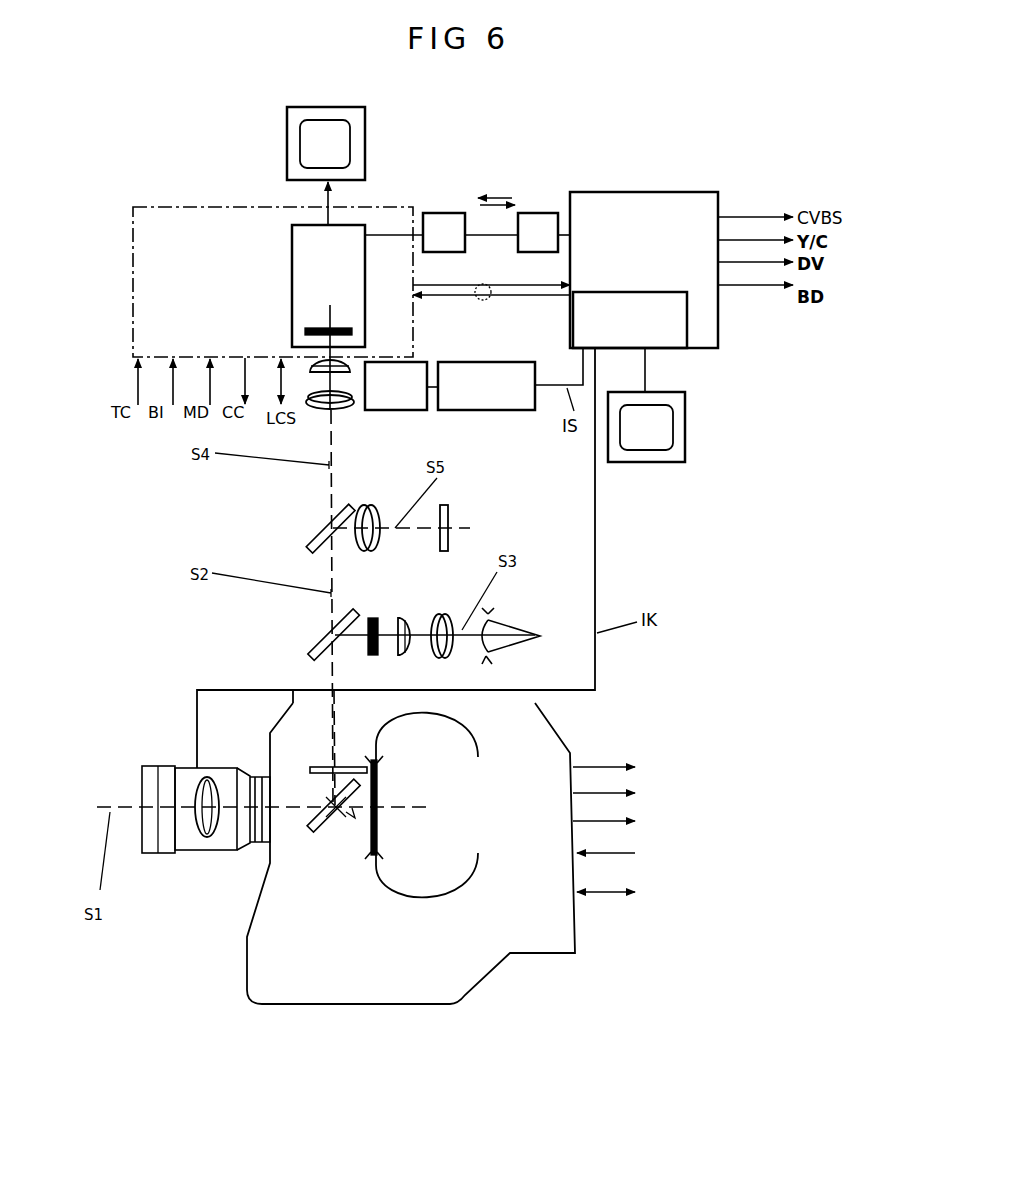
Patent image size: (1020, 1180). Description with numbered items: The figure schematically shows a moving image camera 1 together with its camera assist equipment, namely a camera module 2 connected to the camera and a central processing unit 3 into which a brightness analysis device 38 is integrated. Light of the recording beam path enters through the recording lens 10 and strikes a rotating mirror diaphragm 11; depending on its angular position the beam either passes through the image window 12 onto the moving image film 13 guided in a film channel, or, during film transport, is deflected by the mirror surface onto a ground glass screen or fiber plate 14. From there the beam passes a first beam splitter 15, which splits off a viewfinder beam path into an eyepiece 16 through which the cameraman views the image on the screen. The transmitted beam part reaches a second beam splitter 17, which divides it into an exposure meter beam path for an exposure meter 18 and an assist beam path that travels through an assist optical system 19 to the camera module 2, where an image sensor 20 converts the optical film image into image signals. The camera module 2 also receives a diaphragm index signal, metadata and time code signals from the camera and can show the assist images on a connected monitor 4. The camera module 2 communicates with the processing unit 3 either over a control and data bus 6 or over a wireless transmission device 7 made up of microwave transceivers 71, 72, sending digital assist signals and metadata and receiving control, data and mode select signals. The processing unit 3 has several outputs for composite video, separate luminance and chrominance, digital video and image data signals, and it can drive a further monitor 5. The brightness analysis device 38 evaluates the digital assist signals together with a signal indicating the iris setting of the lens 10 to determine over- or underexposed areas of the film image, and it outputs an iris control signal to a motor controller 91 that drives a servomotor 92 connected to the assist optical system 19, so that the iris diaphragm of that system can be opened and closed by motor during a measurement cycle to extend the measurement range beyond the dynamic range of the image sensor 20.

The moving image camera 1 is at (548, 912).
The camera module 2 is at (392, 218).
The central processing unit 3 is at (653, 200).
The monitor 4 is at (298, 144).
The monitor 5 is at (673, 455).
The control and data bus 6 is at (483, 301).
The wireless transmission device 7 is at (512, 188).
The recording lens 10 is at (207, 840).
The rotating mirror diaphragm 11 is at (318, 825).
The image window 12 is at (378, 795).
The moving image film 13 is at (402, 892).
The ground glass screen or fiber plate 14 is at (318, 768).
The first beam splitter 15 is at (318, 643).
The eyepiece 16 is at (391, 624).
The second beam splitter 17 is at (315, 540).
The exposure meter 18 is at (448, 517).
The assist optical system 19 is at (330, 392).
The image sensor 20 is at (352, 331).
The brightness analysis device 38 is at (672, 342).
The microwave transceiver 71 is at (437, 222).
The microwave transceiver 72 is at (541, 218).
The motor controller 91 is at (530, 400).
The servomotor 92 is at (420, 400).